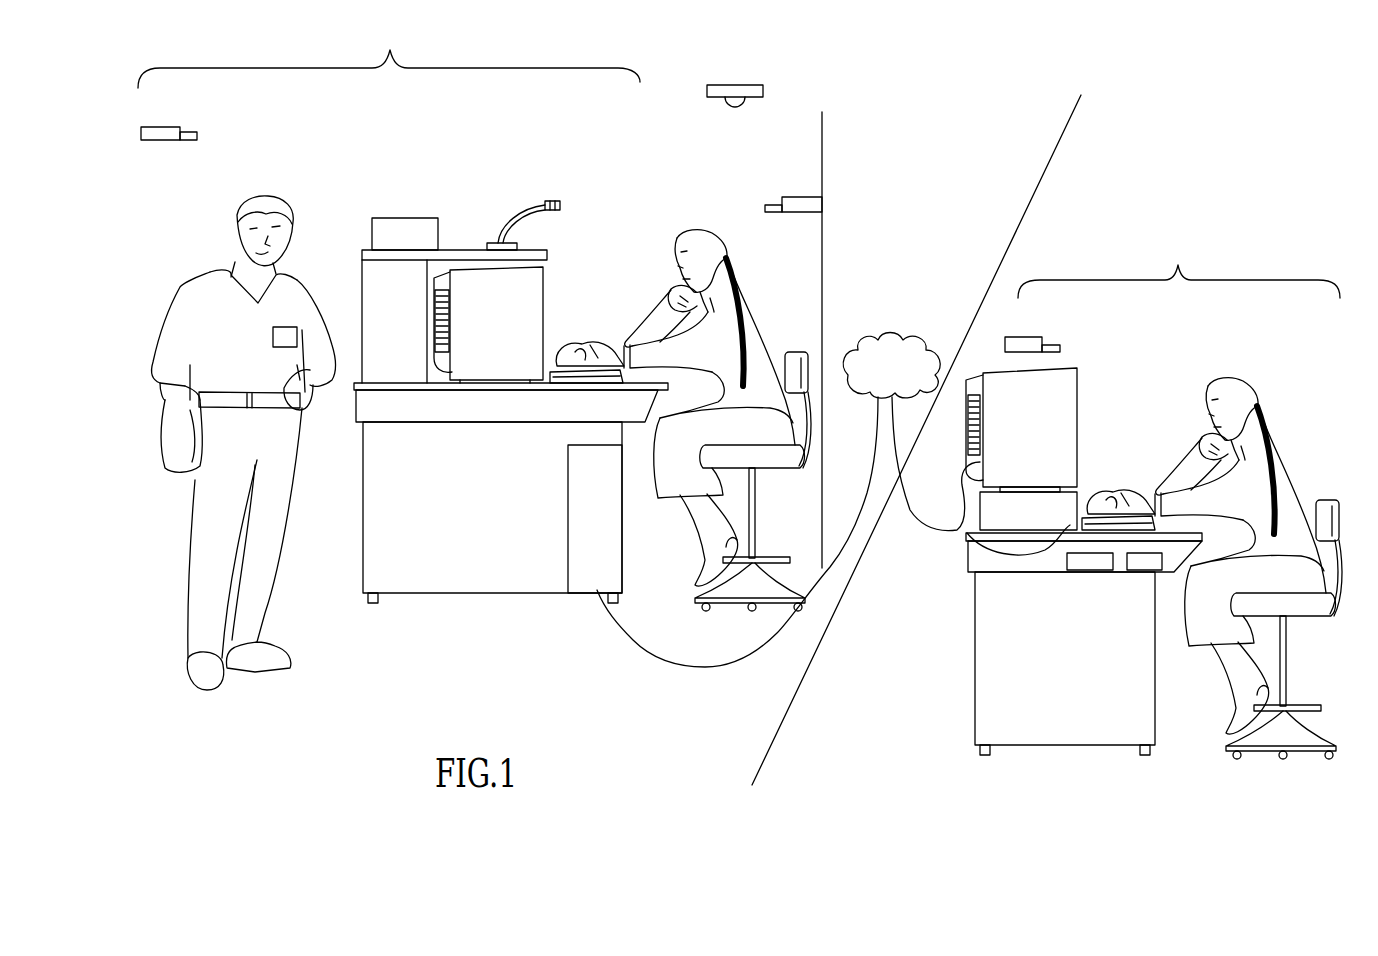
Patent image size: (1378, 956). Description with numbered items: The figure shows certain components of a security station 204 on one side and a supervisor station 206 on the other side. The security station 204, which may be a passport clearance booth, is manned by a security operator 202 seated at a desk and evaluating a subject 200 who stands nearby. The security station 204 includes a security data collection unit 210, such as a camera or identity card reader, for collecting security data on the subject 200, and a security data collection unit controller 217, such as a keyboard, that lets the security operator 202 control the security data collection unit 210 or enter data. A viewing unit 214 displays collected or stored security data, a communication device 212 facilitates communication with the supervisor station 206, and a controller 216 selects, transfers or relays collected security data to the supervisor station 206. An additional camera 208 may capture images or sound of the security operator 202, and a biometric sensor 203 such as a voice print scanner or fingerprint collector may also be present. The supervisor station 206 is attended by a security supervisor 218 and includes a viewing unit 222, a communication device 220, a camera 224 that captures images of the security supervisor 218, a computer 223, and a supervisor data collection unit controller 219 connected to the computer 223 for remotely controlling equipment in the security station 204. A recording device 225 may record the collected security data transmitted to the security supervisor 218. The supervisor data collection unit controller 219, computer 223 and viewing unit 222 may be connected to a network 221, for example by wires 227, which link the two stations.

The subject 200 is at (210, 272).
The security operator 202 is at (758, 352).
The biometric sensor 203 is at (402, 218).
The security station 204 is at (389, 54).
The supervisor station 206 is at (1179, 266).
The camera 208 is at (165, 127).
The security data collection unit 210 is at (806, 197).
The communication device 212 is at (512, 212).
The viewing unit 214 is at (530, 286).
The controller 216 is at (582, 572).
The security data collection unit controller 217 is at (556, 355).
The security supervisor 218 is at (1285, 470).
The supervisor data collection unit controller 219 is at (1095, 513).
The communication device 220 is at (1138, 568).
The network 221 is at (912, 376).
The viewing unit 222 is at (1080, 412).
The computer 223 is at (1020, 538).
The camera 224 is at (1030, 337).
The recording device 225 is at (1100, 566).
The wires 227 is at (710, 91).